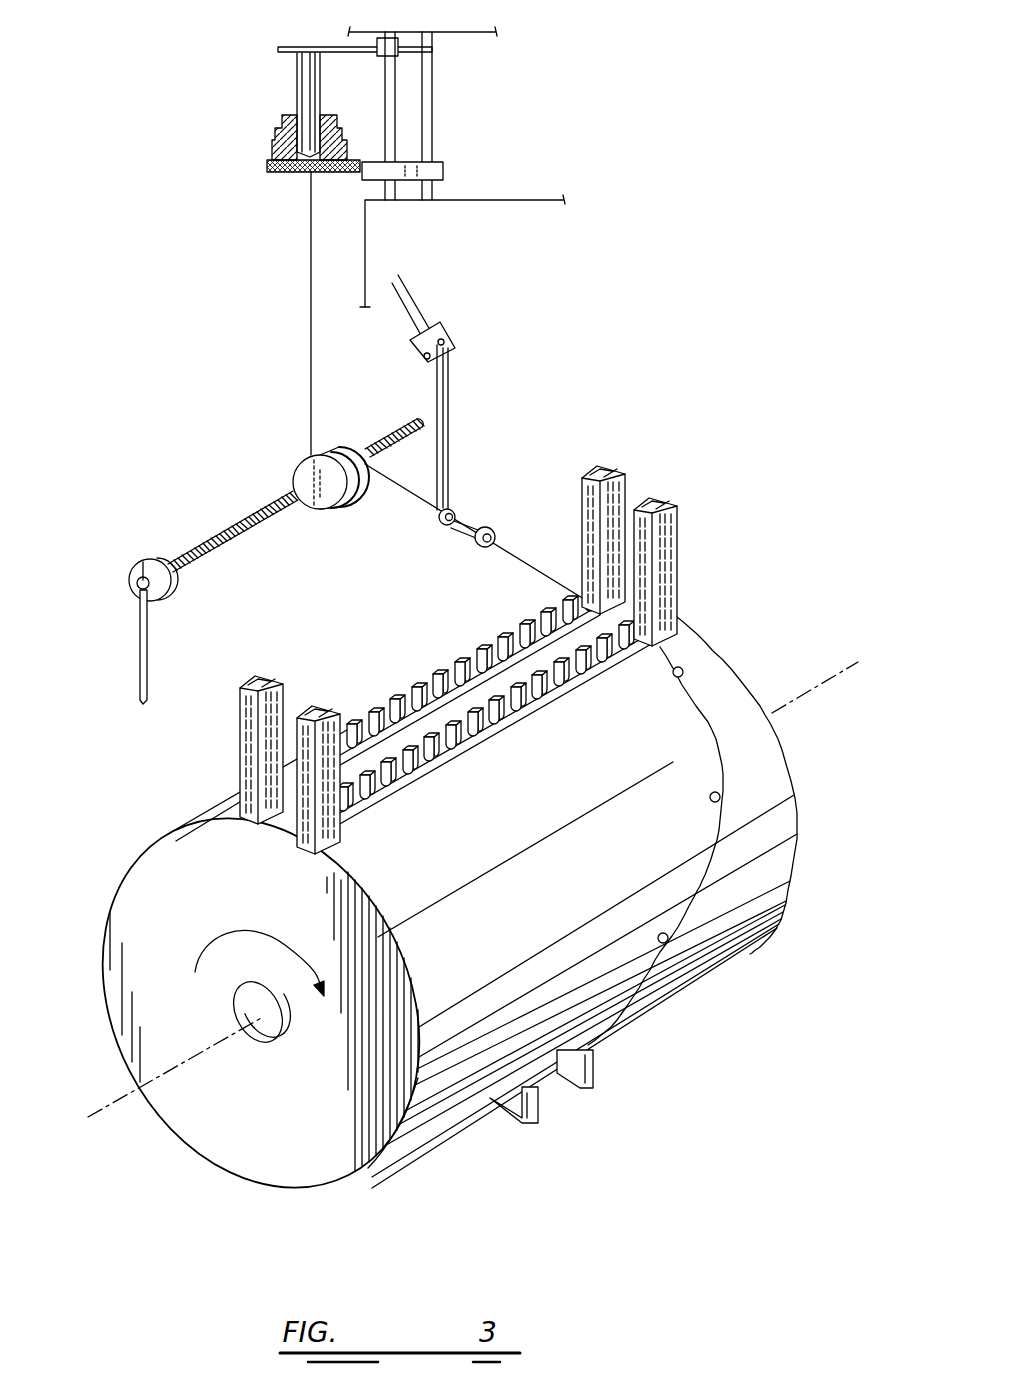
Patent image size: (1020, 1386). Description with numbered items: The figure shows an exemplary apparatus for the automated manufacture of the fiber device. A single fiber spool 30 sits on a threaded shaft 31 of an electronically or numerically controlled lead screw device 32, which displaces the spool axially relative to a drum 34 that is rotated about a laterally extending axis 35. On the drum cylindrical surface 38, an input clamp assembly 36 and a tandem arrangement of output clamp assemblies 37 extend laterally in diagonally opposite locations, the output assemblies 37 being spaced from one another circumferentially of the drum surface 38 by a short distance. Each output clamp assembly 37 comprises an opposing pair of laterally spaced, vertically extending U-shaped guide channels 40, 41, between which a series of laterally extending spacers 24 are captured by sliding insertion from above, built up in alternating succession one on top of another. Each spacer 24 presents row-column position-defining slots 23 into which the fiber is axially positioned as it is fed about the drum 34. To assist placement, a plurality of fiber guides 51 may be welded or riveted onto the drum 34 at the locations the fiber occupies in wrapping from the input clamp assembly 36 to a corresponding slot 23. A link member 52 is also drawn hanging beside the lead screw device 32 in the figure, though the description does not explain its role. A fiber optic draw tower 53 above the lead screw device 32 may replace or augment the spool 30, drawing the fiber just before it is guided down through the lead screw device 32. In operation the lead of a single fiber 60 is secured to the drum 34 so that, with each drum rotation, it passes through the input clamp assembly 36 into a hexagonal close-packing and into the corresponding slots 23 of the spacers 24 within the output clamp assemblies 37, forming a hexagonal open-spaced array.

The slot 23 is at (476, 604).
The spacer 24 is at (437, 670).
The fiber spool 30 is at (297, 463).
The threaded shaft 31 is at (232, 522).
The lead screw device 32 is at (128, 567).
The drum 34 is at (278, 1160).
The axis 35 is at (123, 1083).
The input clamp assembly 36 is at (532, 1127).
The output clamp assembly 37 is at (608, 460).
The drum cylindrical surface 38 is at (193, 824).
The U-shaped guide channel 40 is at (239, 736).
The U-shaped guide channel 41 is at (655, 503).
The fiber guide 51 is at (668, 933).
The link 52 is at (456, 445).
The fiber optic draw tower 53 is at (268, 108).
The single fiber 60 is at (415, 500).